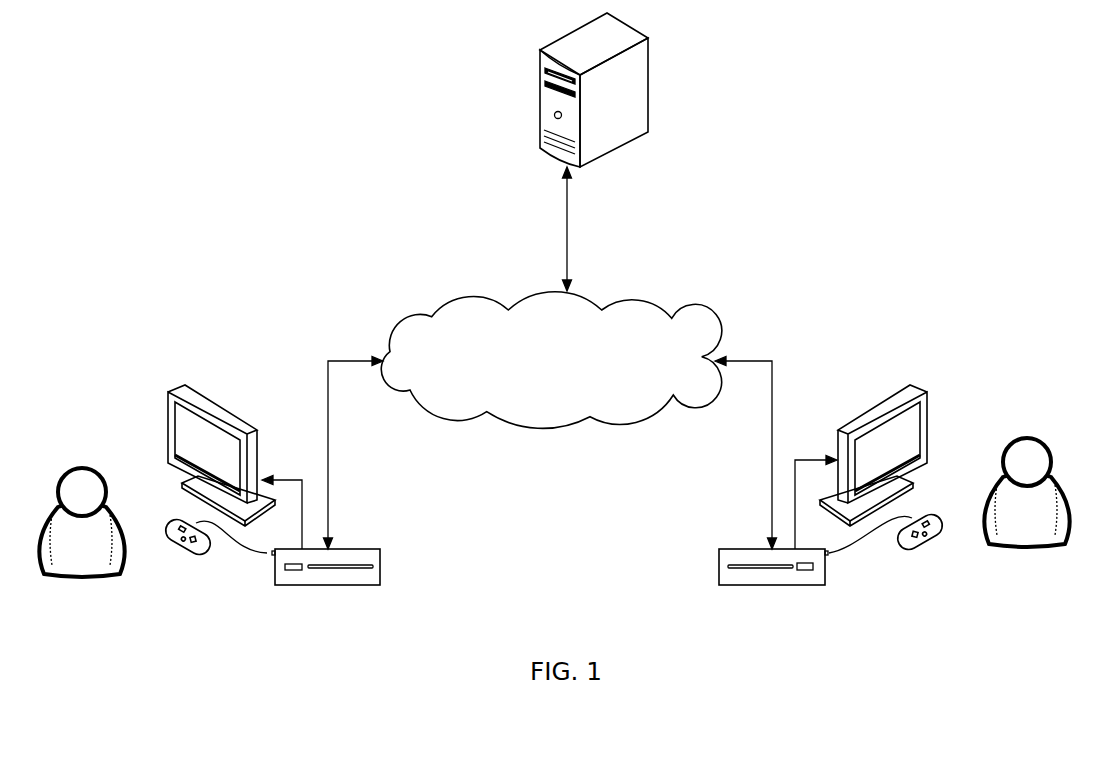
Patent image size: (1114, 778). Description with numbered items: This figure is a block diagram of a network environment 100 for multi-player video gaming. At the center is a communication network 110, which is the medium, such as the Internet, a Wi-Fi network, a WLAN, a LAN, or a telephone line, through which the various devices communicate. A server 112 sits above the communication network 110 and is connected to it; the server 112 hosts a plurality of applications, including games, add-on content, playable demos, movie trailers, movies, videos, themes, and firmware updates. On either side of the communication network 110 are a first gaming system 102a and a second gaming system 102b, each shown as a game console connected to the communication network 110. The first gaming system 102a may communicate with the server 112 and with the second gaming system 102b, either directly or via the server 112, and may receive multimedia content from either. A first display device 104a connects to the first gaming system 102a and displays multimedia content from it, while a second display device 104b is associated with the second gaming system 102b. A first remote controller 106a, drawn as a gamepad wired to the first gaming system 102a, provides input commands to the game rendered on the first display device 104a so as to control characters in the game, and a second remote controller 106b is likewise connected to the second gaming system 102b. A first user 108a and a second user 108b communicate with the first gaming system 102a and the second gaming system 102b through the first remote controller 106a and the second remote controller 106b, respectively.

The network environment 100 is at (960, 82).
The first gaming system 102a is at (380, 550).
The second gaming system 102b is at (719, 564).
The first display device 104a is at (222, 402).
The second display device 104b is at (873, 400).
The first remote controller 106a is at (180, 548).
The second remote controller 106b is at (927, 548).
The first user 108a is at (75, 466).
The second user 108b is at (1023, 438).
The communication network 110 is at (570, 384).
The server 112 is at (540, 92).